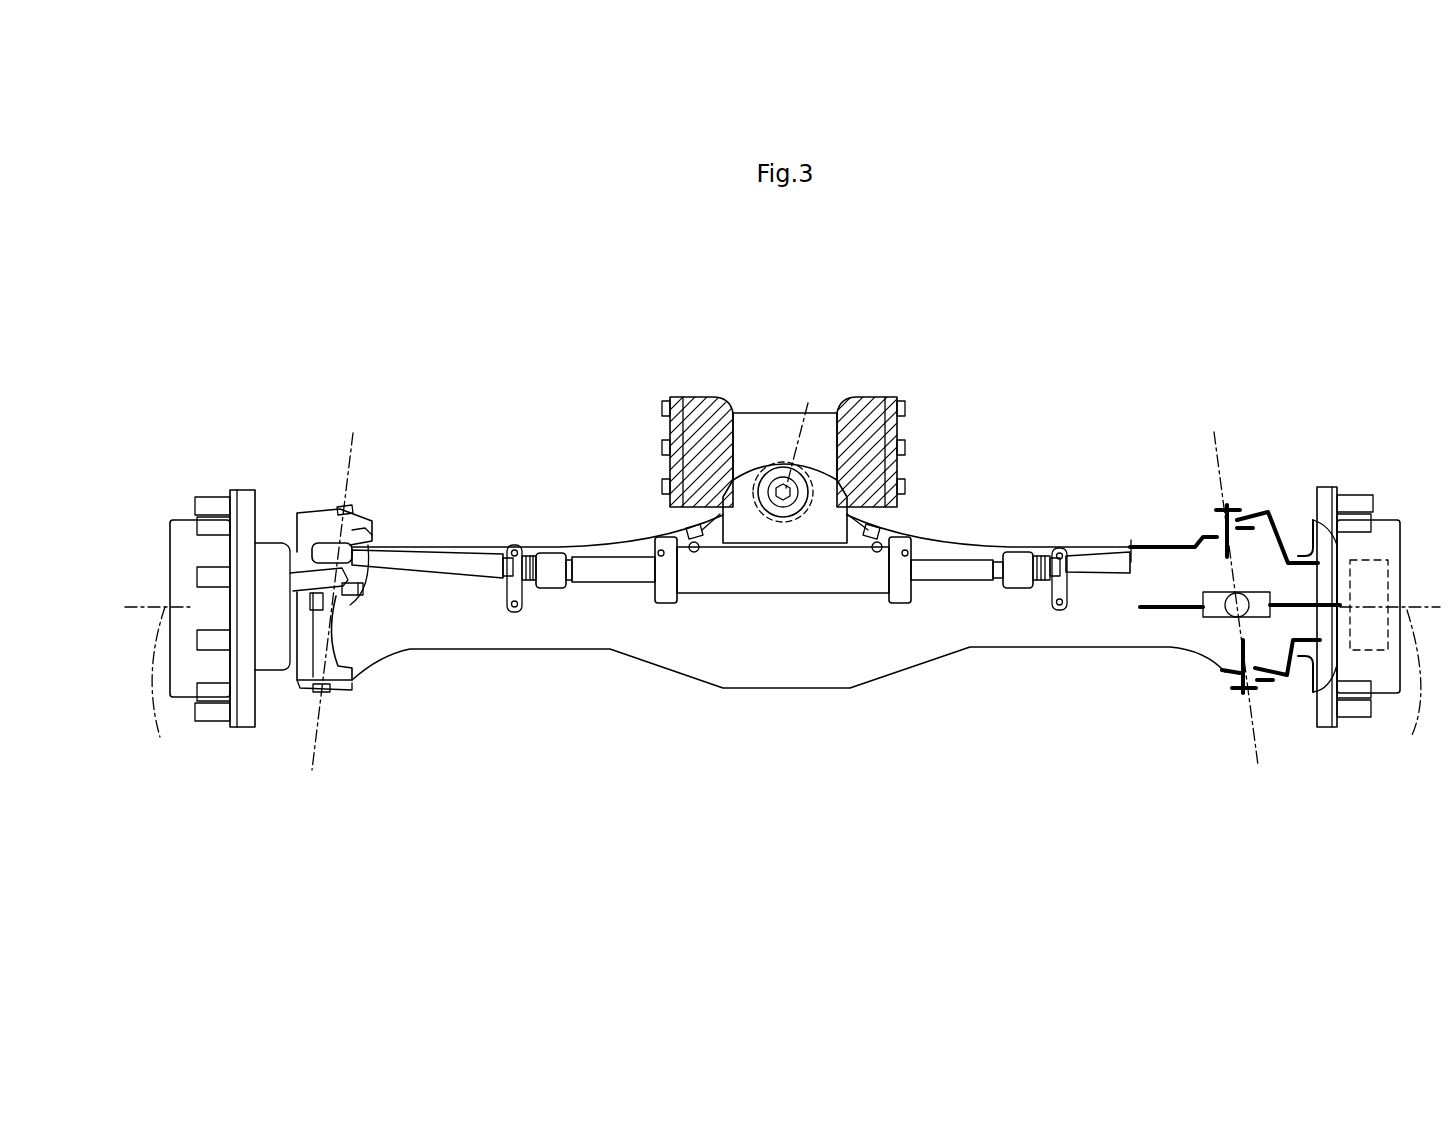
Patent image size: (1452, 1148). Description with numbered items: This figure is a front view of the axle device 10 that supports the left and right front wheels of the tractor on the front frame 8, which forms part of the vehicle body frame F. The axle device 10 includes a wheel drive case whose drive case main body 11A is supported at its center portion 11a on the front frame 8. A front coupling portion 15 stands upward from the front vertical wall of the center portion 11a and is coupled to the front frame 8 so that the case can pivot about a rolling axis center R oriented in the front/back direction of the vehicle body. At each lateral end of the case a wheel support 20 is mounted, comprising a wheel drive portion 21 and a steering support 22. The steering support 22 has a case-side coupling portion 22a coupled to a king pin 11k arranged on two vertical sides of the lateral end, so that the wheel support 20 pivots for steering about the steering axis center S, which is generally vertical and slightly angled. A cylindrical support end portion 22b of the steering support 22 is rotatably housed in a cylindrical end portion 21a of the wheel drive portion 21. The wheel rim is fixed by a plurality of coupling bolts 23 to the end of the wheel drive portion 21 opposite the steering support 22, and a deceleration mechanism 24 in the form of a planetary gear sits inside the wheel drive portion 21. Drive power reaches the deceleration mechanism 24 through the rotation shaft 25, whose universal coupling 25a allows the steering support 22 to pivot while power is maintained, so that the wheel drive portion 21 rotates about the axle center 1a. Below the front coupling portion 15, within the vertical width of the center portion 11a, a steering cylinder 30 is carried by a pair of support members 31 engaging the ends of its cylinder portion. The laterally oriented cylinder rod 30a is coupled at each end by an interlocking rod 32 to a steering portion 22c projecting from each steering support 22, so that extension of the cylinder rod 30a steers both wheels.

The axle center 1a is at (787, 683).
The front frame 8 is at (698, 403).
The axle device 10 is at (1025, 430).
The drive case main body 11A is at (703, 682).
The center portion 11a is at (823, 640).
The king pin 11k is at (353, 513).
The front coupling portion 15 is at (752, 480).
The wheel support 20 is at (243, 485).
The wheel drive portion 21 is at (178, 520).
The cylindrical end portion 21a is at (263, 553).
The steering support 22 is at (322, 512).
The case-side coupling portion 22a is at (343, 687).
The cylindrical support end portion 22b is at (1305, 565).
The steering portion 22c is at (300, 688).
The coupling bolts 23 is at (226, 695).
The deceleration mechanism 24 is at (1360, 560).
The rotation shaft 25 is at (1168, 597).
The universal coupling 25a is at (1240, 605).
The steering cylinder 30 is at (783, 580).
The cylinder rod 30a is at (612, 582).
The support members 31 is at (667, 605).
The interlocking rod 32 is at (465, 562).
The rolling axis center R is at (803, 431).
The vehicle body frame F is at (898, 425).
The steering axis center S is at (785, 588).